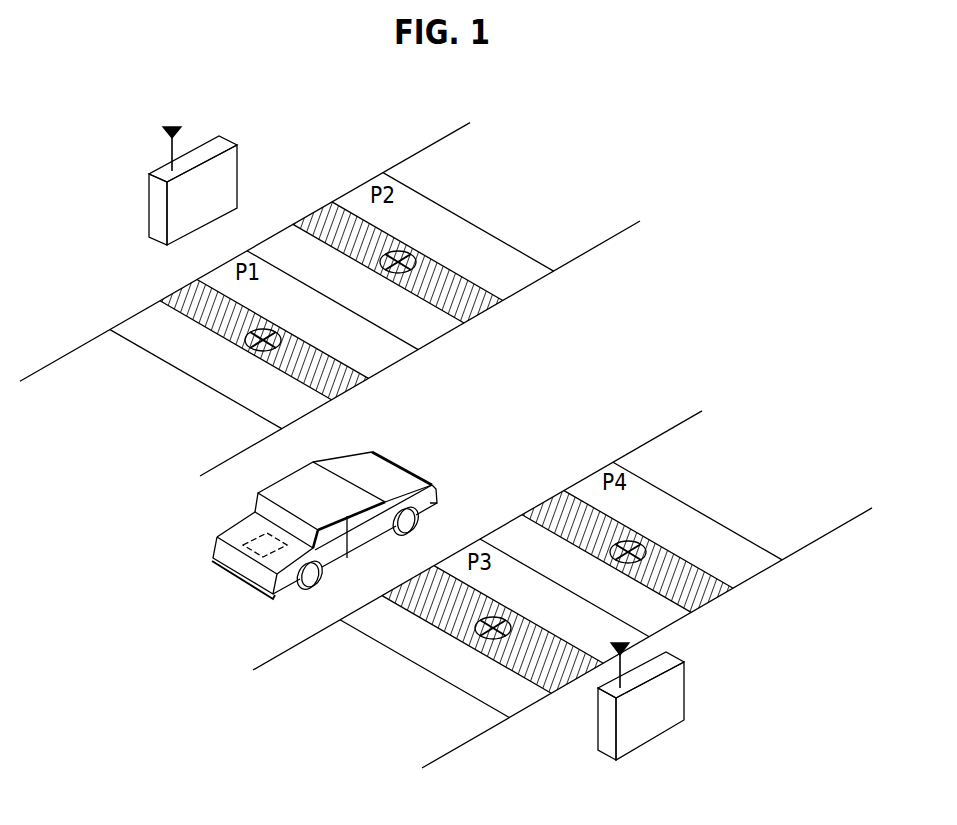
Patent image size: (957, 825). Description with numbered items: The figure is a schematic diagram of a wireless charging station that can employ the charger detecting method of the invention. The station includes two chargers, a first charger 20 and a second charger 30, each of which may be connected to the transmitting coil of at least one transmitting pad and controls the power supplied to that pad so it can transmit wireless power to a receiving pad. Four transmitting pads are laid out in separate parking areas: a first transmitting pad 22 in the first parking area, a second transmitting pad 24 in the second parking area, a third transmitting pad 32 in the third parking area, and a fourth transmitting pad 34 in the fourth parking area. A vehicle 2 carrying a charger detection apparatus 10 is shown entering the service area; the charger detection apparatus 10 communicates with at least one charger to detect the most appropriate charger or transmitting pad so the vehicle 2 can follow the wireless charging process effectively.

The vehicle 2 is at (403, 470).
The charger detection apparatus 10 is at (250, 538).
The first charger 20 is at (238, 172).
The first transmitting pad 22 is at (276, 328).
The second transmitting pad 24 is at (409, 253).
The second charger 30 is at (686, 690).
The third transmitting pad 32 is at (506, 619).
The fourth transmitting pad 34 is at (643, 539).